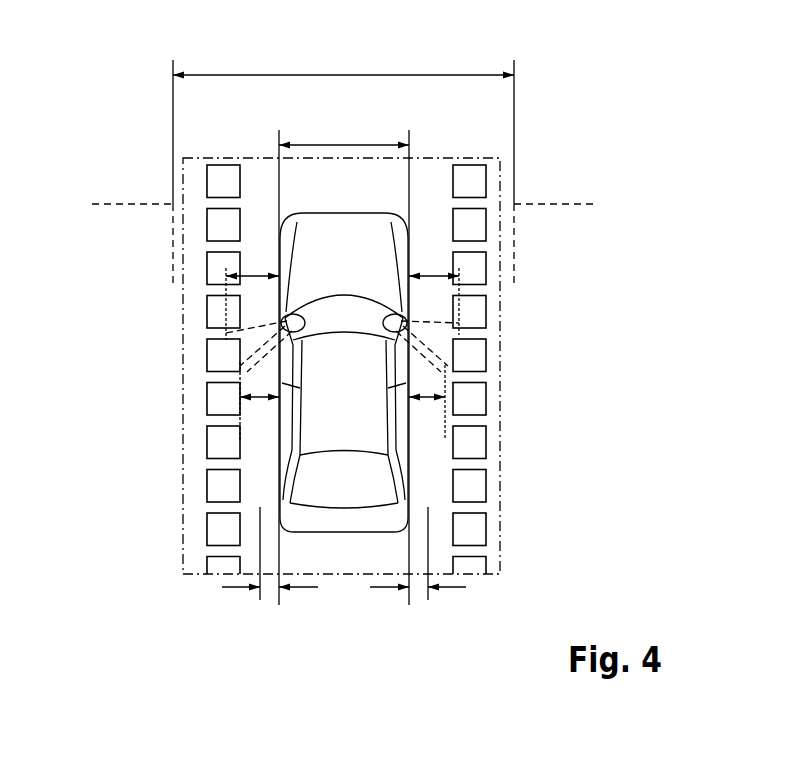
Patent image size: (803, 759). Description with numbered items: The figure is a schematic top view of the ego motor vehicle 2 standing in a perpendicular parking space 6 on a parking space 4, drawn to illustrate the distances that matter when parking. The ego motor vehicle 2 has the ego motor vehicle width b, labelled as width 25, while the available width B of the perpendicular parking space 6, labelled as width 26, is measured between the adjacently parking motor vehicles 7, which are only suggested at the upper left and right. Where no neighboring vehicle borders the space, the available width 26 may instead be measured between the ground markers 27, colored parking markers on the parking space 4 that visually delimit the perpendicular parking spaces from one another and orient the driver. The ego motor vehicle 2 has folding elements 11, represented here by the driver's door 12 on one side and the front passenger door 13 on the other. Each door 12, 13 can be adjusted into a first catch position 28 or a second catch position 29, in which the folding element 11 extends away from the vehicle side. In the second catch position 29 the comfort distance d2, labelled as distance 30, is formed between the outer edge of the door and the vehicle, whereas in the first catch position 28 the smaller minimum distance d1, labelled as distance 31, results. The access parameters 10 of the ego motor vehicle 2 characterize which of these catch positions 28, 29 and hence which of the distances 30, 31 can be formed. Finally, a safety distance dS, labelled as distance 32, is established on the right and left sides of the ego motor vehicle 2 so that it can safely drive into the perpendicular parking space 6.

The ego motor vehicle 2 is at (413, 240).
The parking space 4 is at (202, 541).
The perpendicular parking space 6 is at (255, 180).
The adjacently parking motor vehicle 7 is at (102, 193).
The access parameters 10 is at (250, 346).
The folding element 11 is at (307, 360).
The driver's door 12 is at (156, 354).
The front passenger door 13 is at (534, 354).
The ego motor vehicle width 25 is at (341, 144).
The available width 26 is at (343, 74).
The ground marker 27 is at (497, 410).
The first catch position 28 is at (240, 368).
The second catch position 29 is at (226, 334).
The comfort distance 30 is at (252, 276).
The minimum distance 31 is at (258, 398).
The safety distance 32 is at (268, 590).